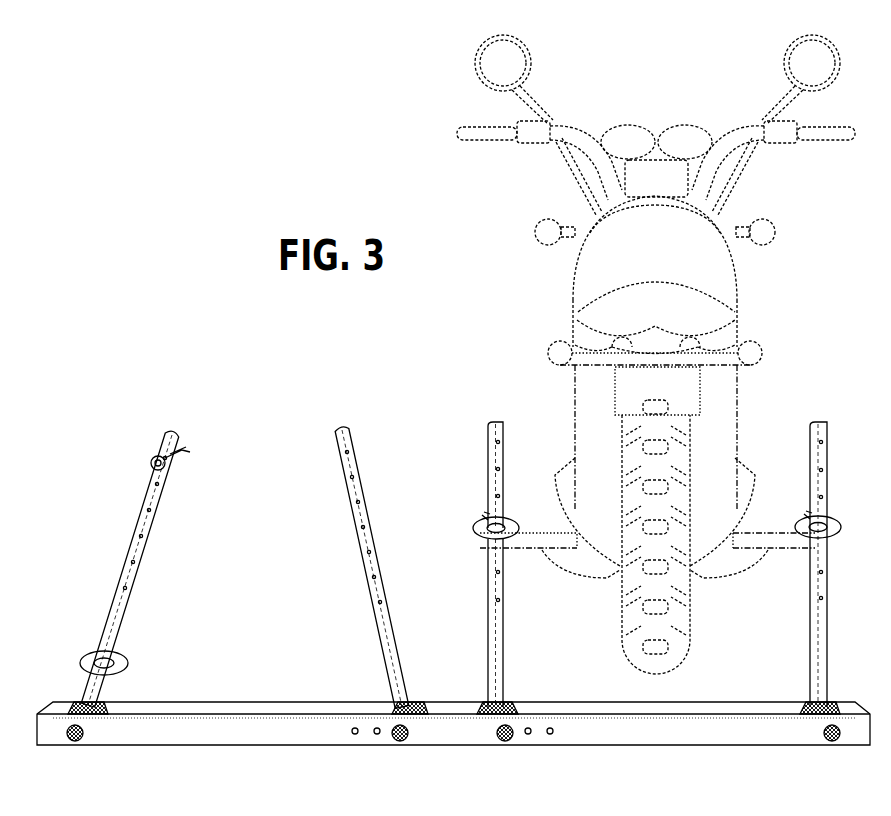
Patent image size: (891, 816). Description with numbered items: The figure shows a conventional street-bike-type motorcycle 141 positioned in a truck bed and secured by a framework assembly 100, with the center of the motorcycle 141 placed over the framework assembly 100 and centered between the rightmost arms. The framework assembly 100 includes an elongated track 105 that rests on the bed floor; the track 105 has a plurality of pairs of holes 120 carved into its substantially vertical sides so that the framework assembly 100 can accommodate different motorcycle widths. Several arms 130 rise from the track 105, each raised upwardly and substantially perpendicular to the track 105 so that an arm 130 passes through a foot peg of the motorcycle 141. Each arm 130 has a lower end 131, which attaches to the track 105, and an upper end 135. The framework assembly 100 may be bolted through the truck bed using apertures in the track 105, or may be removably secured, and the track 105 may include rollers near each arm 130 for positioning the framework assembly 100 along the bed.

The framework assembly 100 is at (262, 427).
The track 105 is at (214, 740).
The pairs of holes 120 is at (355, 738).
The arm 130 is at (484, 581).
The lower end 131 is at (484, 665).
The upper end 135 is at (483, 479).
The motorcycle 141 is at (724, 268).